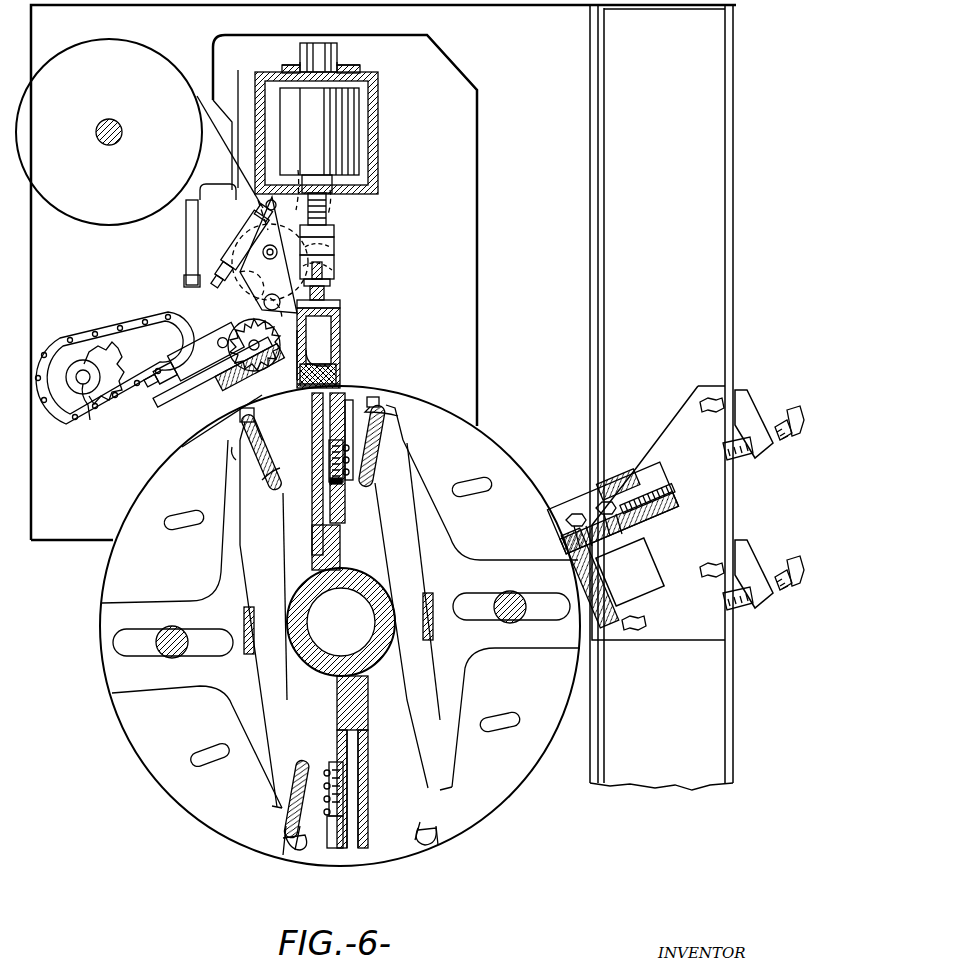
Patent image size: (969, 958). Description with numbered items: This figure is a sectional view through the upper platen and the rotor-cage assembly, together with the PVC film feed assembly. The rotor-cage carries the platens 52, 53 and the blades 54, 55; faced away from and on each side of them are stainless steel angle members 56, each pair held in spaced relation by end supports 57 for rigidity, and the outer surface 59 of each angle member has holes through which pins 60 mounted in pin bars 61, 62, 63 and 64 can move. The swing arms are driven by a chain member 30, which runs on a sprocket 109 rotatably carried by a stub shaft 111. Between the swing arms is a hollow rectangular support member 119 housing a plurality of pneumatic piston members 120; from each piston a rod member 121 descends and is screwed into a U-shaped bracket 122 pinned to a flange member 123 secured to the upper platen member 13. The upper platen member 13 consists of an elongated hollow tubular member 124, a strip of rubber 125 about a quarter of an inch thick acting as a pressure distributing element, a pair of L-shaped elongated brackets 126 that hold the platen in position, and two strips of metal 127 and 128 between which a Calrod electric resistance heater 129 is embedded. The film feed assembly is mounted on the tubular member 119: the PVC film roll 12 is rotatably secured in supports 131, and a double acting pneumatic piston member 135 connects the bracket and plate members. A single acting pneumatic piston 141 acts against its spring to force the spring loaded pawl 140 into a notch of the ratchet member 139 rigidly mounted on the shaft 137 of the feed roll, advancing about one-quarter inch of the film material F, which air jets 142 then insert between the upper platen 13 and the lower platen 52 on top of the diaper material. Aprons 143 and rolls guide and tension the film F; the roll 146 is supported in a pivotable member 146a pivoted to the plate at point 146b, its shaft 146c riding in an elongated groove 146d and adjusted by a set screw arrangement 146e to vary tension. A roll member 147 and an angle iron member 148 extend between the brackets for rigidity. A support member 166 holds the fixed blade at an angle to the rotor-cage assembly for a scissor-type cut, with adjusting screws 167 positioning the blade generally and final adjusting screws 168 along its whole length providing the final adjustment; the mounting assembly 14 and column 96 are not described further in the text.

The PVC film roll 12 is at (108, 41).
The upper platen member 13 is at (360, 335).
The mounting assembly 14 is at (556, 544).
The chain member 30 is at (100, 326).
The lower platen 52 is at (312, 520).
The platen 53 is at (368, 832).
The blade 54 is at (345, 392).
The blade 55 is at (338, 858).
The angle member 56 is at (231, 465).
The end support 57 is at (152, 692).
The outer surface 59 is at (239, 442).
The pin 60 is at (238, 422).
The pin bar 61 is at (270, 462).
The pin bar 62 is at (384, 455).
The pin bar 63 is at (372, 808).
The pin bar 64 is at (304, 858).
The column 96 is at (735, 122).
The sprocket 109 is at (68, 336).
The stub shaft 111 is at (78, 428).
The hollow rectangular support member 119 is at (380, 72).
The pneumatic piston member 120 is at (360, 110).
The rod member 121 is at (330, 206).
The U-shaped bracket 122 is at (332, 240).
The flange member 123 is at (338, 308).
The elongated hollow tubular member 124 is at (350, 316).
The strip of rubber 125 is at (332, 376).
The L-shaped elongated bracket 126 is at (340, 386).
The strip of metal 127 is at (330, 356).
The strip of metal 128 is at (394, 428).
The Calrod electric resistance heater 129 is at (304, 440).
The support 131 is at (205, 70).
The double acting pneumatic piston member 135 is at (198, 203).
The shaft 137 is at (203, 421).
The ratchet member 139 is at (298, 412).
The spring loaded pawl 140 is at (180, 338).
The single acting pneumatic piston 141 is at (262, 210).
The air jet 142 is at (272, 378).
The apron 143 is at (160, 392).
The roll 146 is at (337, 246).
The pivotable member 146a is at (222, 238).
The pivot point 146b is at (212, 256).
The shaft 146c is at (330, 297).
The elongated groove 146d is at (337, 266).
The set screw arrangement 146e is at (205, 292).
The roll member 147 is at (300, 178).
The angle iron member 148 is at (228, 375).
The support member 166 is at (728, 518).
The adjusting screw 167 is at (778, 412).
The final adjusting screw 168 is at (680, 488).
The PVC film material F is at (206, 100).